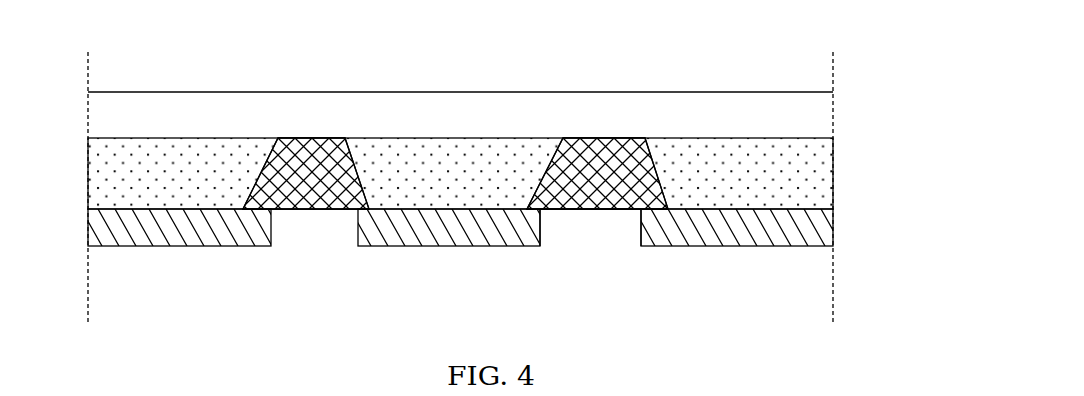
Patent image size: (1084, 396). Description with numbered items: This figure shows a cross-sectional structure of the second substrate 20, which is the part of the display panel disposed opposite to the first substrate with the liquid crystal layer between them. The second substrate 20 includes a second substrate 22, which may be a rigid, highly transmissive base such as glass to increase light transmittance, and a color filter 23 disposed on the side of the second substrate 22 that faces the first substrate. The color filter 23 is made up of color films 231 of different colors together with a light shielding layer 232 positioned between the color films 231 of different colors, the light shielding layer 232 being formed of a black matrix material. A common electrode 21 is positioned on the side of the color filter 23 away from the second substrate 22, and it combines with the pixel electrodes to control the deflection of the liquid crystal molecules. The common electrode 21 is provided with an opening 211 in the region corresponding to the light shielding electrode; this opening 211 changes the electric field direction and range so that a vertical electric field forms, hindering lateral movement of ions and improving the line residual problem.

The second substrate 20 is at (490, 166).
The common electrode 21 is at (500, 257).
The opening 211 is at (585, 238).
The second substrate 22 is at (773, 110).
The color filter 23 is at (482, 109).
The color films 231 is at (443, 138).
The light shielding layer 232 is at (528, 46).